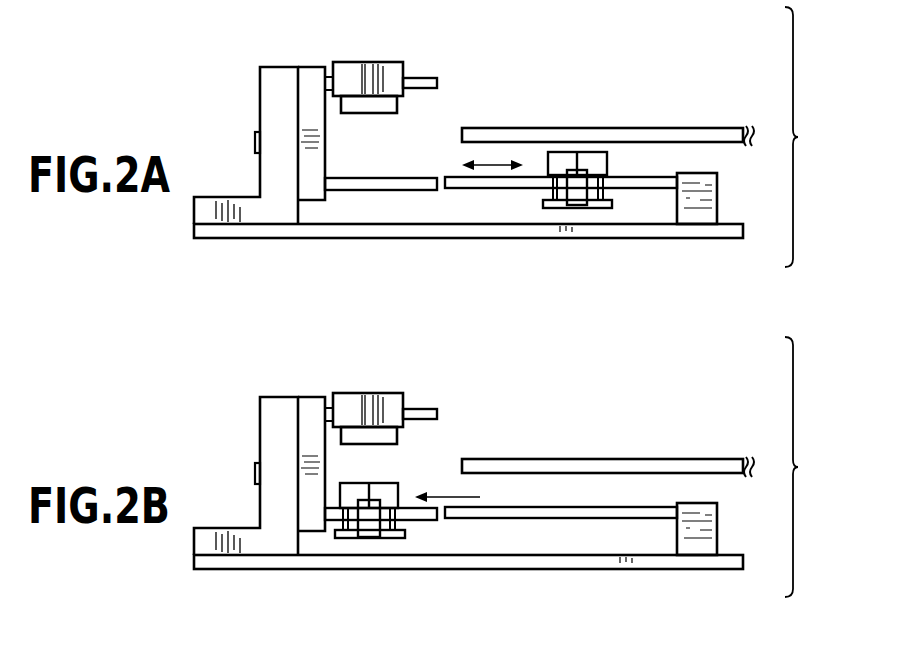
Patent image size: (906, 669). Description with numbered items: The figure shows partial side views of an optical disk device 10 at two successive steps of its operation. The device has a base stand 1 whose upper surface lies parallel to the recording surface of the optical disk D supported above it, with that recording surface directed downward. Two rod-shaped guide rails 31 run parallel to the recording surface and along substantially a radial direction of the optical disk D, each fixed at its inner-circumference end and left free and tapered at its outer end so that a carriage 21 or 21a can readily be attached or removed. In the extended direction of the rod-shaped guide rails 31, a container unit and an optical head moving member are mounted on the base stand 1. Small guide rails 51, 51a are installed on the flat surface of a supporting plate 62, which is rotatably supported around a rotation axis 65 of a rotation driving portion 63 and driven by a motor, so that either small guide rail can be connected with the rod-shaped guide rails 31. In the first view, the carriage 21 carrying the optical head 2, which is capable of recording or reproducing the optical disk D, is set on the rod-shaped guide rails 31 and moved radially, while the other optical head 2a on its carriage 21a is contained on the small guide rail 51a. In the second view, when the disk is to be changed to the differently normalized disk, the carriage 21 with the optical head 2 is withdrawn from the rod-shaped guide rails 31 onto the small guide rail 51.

In FIG. 2A, the base stand 1 is at (702, 238).
In FIG. 2A, the optical head 2 is at (597, 165).
In FIG. 2B, the optical head 2 is at (387, 492).
In FIG. 2A, the optical head 2a is at (383, 107).
In FIG. 2A, the optical disk device 10 is at (795, 167).
In FIG. 2B, the optical disk device 10 is at (795, 497).
In FIG. 2A, the carriage 21 is at (575, 205).
In FIG. 2B, the carriage 21 is at (365, 537).
In FIG. 2A, the carriage 21a is at (362, 68).
In FIG. 2A, the rod-shaped guide rail 31 is at (462, 190).
In FIG. 2B, the rod-shaped guide rail 31 is at (582, 519).
In FIG. 2A, the small guide rail 51 is at (372, 192).
In FIG. 2B, the small guide rail 51 is at (332, 521).
In FIG. 2A, the small guide rail 51a is at (425, 80).
In FIG. 2A, the supporting plate 62 is at (310, 73).
In FIG. 2A, the rotation driving portion 63 is at (268, 72).
In FIG. 2A, the rotation axis 65 is at (255, 142).
In FIG. 2A, the optical disk D is at (722, 127).
In FIG. 2B, the optical disk D is at (727, 458).